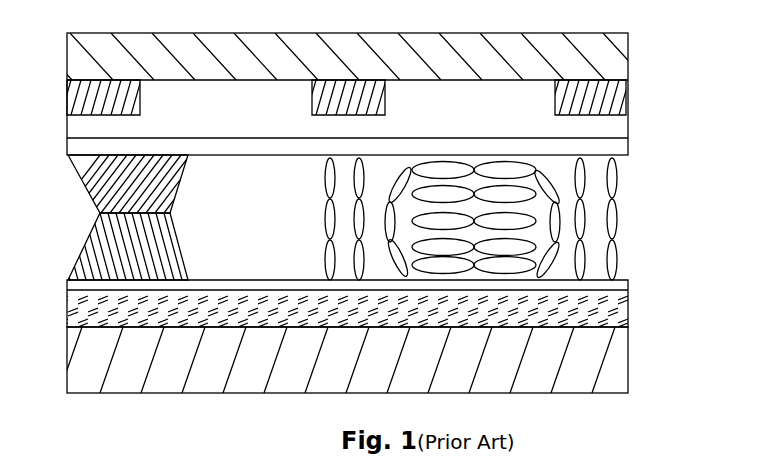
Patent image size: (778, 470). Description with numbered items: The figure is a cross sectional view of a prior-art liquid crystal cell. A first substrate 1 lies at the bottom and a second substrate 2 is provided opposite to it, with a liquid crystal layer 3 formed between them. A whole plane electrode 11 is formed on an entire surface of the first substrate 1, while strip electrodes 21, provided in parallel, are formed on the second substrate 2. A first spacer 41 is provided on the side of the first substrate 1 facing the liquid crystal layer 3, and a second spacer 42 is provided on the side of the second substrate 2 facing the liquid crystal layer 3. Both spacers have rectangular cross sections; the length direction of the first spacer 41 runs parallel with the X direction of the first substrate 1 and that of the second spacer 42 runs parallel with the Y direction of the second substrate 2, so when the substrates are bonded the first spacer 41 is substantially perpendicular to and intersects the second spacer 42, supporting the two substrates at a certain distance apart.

The first substrate 1 is at (628, 375).
The second substrate 2 is at (628, 55).
The strip electrodes 21 is at (628, 97).
The liquid crystal layer 3 is at (642, 216).
The whole plane electrode 11 is at (628, 313).
The first spacer 41 is at (82, 268).
The second spacer 42 is at (85, 176).